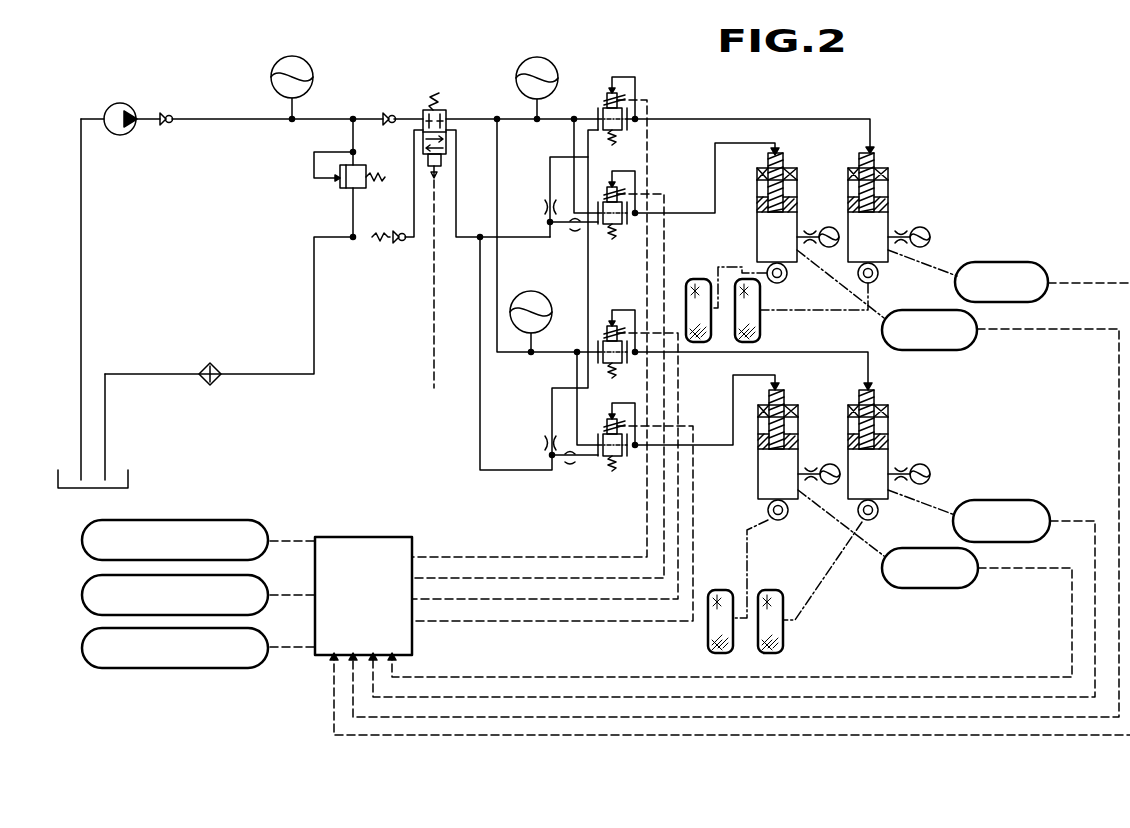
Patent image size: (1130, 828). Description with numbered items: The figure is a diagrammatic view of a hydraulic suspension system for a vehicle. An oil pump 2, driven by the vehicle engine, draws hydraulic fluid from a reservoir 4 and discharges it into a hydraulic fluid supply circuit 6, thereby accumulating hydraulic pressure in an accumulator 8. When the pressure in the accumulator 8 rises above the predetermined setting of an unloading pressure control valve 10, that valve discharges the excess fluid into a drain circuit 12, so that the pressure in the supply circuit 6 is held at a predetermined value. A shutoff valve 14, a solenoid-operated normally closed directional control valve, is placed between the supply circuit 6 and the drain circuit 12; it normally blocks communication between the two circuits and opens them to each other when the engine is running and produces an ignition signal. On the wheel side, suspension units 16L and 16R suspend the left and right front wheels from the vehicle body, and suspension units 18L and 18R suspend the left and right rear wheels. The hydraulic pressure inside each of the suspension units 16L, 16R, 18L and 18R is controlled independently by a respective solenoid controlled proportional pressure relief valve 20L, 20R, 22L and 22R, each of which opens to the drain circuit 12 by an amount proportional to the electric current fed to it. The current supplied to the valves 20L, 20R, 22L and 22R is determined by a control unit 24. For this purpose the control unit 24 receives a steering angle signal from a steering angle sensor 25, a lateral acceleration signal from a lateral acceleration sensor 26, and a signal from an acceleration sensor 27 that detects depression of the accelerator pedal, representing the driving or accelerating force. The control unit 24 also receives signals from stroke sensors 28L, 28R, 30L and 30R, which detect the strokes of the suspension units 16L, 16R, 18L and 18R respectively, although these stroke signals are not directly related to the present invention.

The oil pump 2 is at (120, 103).
The reservoir 4 is at (128, 479).
The hydraulic fluid supply circuit 6 is at (226, 120).
The accumulator 8 is at (303, 60).
The unloading pressure control valve 10 is at (340, 188).
The drain circuit 12 is at (236, 371).
The shutoff valve 14 is at (428, 105).
The suspension unit 16L is at (800, 166).
The suspension unit 16R is at (888, 172).
The suspension unit 18L is at (758, 488).
The suspension unit 18R is at (888, 412).
The solenoid controlled proportional pressure relief valve 20R is at (600, 112).
The solenoid controlled proportional pressure relief valve 20L is at (603, 240).
The solenoid controlled proportional pressure relief valve 22R is at (600, 340).
The solenoid controlled proportional pressure relief valve 22L is at (598, 462).
The control unit 24 is at (375, 537).
The steering angle sensor 25 is at (243, 520).
The lateral acceleration sensor 26 is at (82, 596).
The acceleration sensor 27 is at (235, 668).
The stroke sensor 28R is at (1015, 262).
The stroke sensor 28L is at (975, 345).
The stroke sensor 30R is at (1020, 500).
The stroke sensor 30L is at (975, 585).